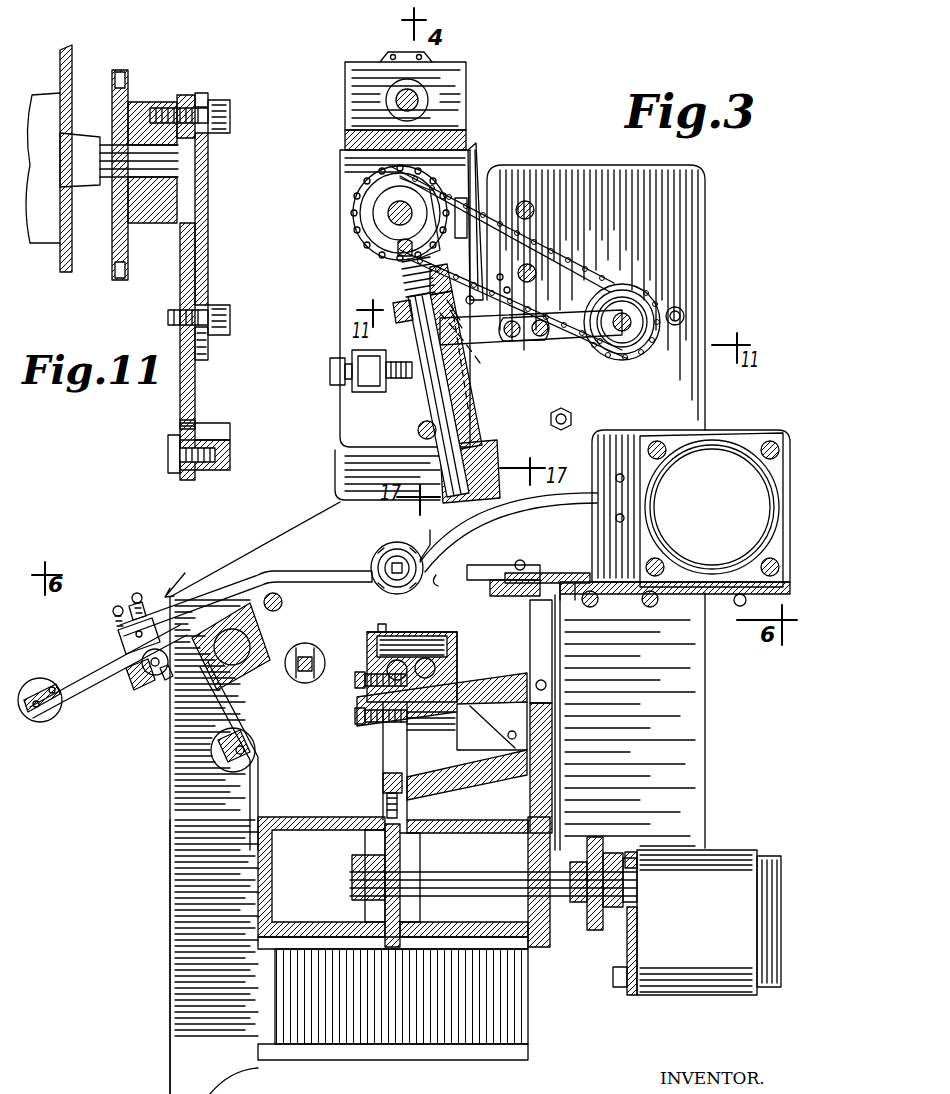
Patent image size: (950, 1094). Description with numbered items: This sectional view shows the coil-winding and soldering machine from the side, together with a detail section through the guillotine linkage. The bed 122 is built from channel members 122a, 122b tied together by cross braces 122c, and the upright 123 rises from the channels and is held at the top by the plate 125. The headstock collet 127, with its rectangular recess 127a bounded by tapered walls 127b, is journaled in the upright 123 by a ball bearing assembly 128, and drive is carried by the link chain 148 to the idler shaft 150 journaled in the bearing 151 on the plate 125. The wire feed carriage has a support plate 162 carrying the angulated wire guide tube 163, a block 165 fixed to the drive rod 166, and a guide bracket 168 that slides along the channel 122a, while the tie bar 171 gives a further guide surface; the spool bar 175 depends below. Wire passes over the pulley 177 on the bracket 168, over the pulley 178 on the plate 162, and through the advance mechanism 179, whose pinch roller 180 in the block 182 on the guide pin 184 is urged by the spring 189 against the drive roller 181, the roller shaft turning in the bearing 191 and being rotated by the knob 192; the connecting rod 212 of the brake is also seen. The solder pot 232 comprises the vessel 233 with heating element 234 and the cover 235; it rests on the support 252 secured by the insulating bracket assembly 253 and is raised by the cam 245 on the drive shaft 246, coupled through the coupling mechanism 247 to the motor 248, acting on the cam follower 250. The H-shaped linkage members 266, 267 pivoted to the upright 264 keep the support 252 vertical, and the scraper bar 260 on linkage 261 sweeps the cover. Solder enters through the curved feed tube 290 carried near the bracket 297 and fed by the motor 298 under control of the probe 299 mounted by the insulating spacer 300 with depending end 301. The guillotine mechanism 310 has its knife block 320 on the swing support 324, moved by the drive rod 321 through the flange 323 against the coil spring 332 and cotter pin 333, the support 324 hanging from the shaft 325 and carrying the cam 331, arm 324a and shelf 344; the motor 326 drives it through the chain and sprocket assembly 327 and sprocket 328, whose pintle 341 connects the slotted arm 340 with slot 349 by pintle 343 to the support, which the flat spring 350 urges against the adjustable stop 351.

In FIG. 3, the bed 122 is at (254, 902).
In FIG. 3, the channel member 122a is at (292, 968).
In FIG. 3, the channel member 122b is at (440, 970).
In FIG. 3, the cross brace 122c is at (515, 1022).
In FIG. 3, the upright 123 is at (305, 532).
In FIG. 3, the plate 125 is at (365, 135).
In FIG. 3, the headstock collet 127 is at (426, 530).
In FIG. 3, the rectangular recess 127a is at (392, 557).
In FIG. 3, the tapered wall 127b is at (386, 584).
In FIG. 3, the ball bearing assembly 128 is at (436, 540).
In FIG. 3, the link chain 148 is at (394, 52).
In FIG. 3, the idler shaft 150 is at (414, 98).
In FIG. 3, the bearing 151 is at (425, 68).
In FIG. 3, the support plate 162 is at (98, 682).
In FIG. 3, the wire guide tube 163 is at (340, 574).
In FIG. 3, the apertured block 165 is at (230, 690).
In FIG. 3, the drive rod 166 is at (252, 628).
In FIG. 3, the guide bracket 168 is at (260, 800).
In FIG. 3, the guide rod or tie bar 171 is at (282, 604).
In FIG. 3, the bar 175 is at (172, 1052).
In FIG. 3, the pulley 177 is at (225, 766).
In FIG. 3, the pulley 178 is at (54, 680).
In FIG. 3, the manual wire advance mechanism 179 is at (183, 574).
In FIG. 3, the pinch roller 180 is at (141, 604).
In FIG. 3, the drive roller 181 is at (168, 682).
In FIG. 3, the support block 182 is at (118, 642).
In FIG. 3, the headed guide pin 184 is at (132, 600).
In FIG. 3, the spring 189 is at (113, 614).
In FIG. 3, the bearing 191 is at (125, 690).
In FIG. 3, the knob 192 is at (172, 697).
In FIG. 3, the connecting rod 212 is at (305, 683).
In FIG. 3, the solder pot 232 is at (462, 648).
In FIG. 3, the vessel 233 is at (460, 658).
In FIG. 3, the heating element 234 is at (385, 665).
In FIG. 3, the cover 235 is at (447, 632).
In FIG. 3, the cam 245 is at (380, 851).
In FIG. 3, the drive shaft 246 is at (495, 877).
In FIG. 3, the coupling mechanism 247 is at (596, 832).
In FIG. 3, the motor 248 is at (730, 852).
In FIG. 3, the cam follower 250 is at (385, 798).
In FIG. 3, the solder pot support 252 is at (380, 720).
In FIG. 3, the insulating bracket assembly 253 is at (355, 690).
In FIG. 3, the scraper bar 260 is at (382, 624).
In FIG. 3, the linkage 261 is at (505, 737).
In FIG. 3, the upright supporting member 264 is at (553, 722).
In FIG. 3, the H-shaped linkage member 266 is at (440, 748).
In FIG. 3, the H-shaped linkage member 267 is at (480, 786).
In FIG. 3, the curved feed tube 290 is at (592, 498).
In FIG. 3, the bracket 297 is at (785, 435).
In FIG. 3, the motor 298 is at (720, 462).
In FIG. 3, the conductive probe 299 is at (528, 556).
In FIG. 3, the insulating spacer 300 is at (565, 572).
In FIG. 3, the depending end 301 is at (452, 580).
In FIG. 3, the guillotine mechanism 310 is at (496, 390).
In FIG. 3, the support block 320 is at (440, 463).
In FIG. 3, the drive rod 321 is at (438, 399).
In FIG. 3, the flange 323 is at (393, 305).
In FIG. 11, the swing or pendulum support 324 is at (212, 432).
In FIG. 3, the swing or pendulum support 324 is at (478, 412).
In FIG. 3, the arm 324a is at (300, 222).
In FIG. 3, the guillotine drive shaft 325 is at (392, 208).
In FIG. 11, the drive motor 326 is at (48, 100).
In FIG. 3, the chain and sprocket assembly 327 is at (597, 205).
In FIG. 11, the drive sprocket 328 is at (138, 100).
In FIG. 3, the drive sprocket 328 is at (355, 221).
In FIG. 3, the cam 331 is at (400, 185).
In FIG. 3, the coil spring 332 is at (400, 270).
In FIG. 3, the cotter pin 333 is at (396, 252).
In FIG. 11, the arm 340 is at (218, 345).
In FIG. 3, the arm 340 is at (500, 310).
In FIG. 11, the pintle 341 is at (220, 105).
In FIG. 3, the pintle 341 is at (655, 340).
In FIG. 11, the pintle 343 is at (168, 457).
In FIG. 3, the pintle 343 is at (478, 366).
In FIG. 3, the shelf 344 is at (485, 585).
In FIG. 11, the slot 349 is at (180, 426).
In FIG. 3, the slot 349 is at (470, 338).
In FIG. 3, the flat spring 350 is at (475, 130).
In FIG. 3, the adjustable stop 351 is at (342, 358).